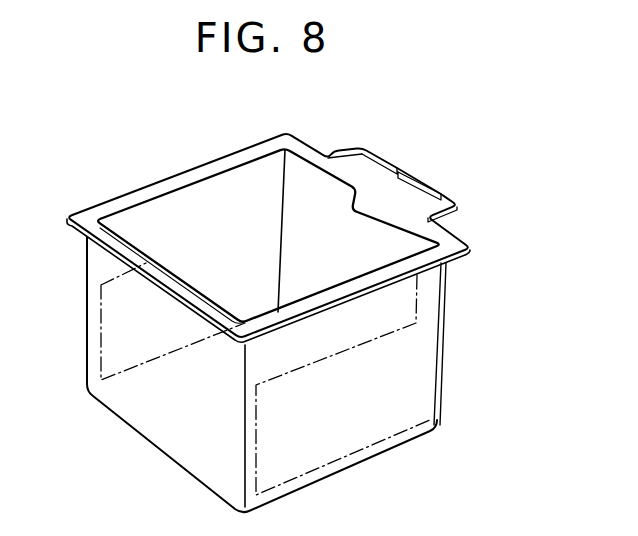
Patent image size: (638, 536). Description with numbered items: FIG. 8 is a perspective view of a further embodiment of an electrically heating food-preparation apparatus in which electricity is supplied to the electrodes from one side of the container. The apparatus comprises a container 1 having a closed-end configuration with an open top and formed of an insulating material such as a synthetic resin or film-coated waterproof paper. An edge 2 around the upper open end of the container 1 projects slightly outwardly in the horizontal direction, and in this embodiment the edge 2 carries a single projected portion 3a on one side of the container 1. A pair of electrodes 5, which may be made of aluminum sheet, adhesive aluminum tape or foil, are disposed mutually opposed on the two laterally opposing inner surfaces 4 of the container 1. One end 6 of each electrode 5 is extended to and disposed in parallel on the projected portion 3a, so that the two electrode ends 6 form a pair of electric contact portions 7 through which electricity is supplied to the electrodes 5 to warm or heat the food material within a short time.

The container 1 is at (447, 278).
The edge 2 is at (110, 200).
The projected portion 3a is at (347, 150).
The inner surfaces 4 is at (155, 217).
The electrode 5 is at (217, 253).
The electrode end 6 is at (373, 168).
The electric contact portion 7 is at (396, 159).